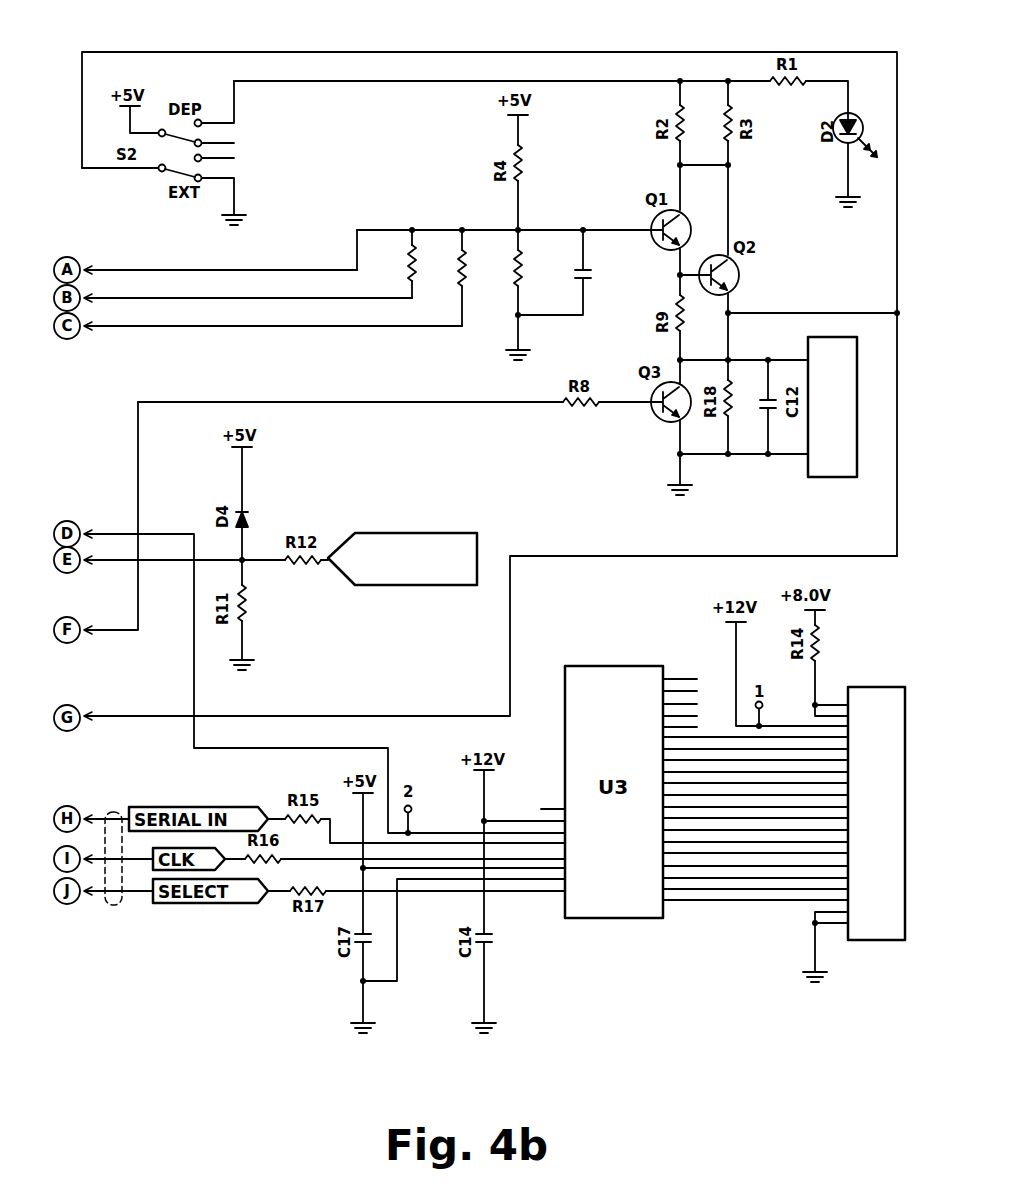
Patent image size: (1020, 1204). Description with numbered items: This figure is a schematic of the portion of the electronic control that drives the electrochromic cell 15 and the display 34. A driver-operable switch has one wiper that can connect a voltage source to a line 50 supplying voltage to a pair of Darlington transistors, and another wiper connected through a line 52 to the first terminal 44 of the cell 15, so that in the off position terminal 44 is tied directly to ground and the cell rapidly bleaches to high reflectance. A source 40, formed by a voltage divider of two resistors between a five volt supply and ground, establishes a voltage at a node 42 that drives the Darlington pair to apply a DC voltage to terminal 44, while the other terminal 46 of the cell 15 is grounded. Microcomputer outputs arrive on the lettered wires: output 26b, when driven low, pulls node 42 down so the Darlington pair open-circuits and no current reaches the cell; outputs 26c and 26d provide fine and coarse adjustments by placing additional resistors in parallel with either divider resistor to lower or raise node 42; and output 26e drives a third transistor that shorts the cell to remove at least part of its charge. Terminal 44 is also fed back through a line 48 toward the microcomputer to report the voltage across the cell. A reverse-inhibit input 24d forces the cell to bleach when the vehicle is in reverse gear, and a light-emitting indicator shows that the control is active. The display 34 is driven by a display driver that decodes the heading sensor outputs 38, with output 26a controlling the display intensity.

The line 52 is at (430, 52).
The line 50 is at (320, 82).
The source 40 is at (483, 210).
The node 42 is at (518, 230).
The output 26b is at (130, 269).
The output 26c is at (158, 299).
The output 26d is at (233, 327).
The output 26e is at (138, 513).
The output 26a is at (194, 641).
The reverse-inhibit input 24d is at (331, 555).
The first terminal 44 is at (745, 360).
The terminal 46 is at (745, 455).
The electrochromic cell 15 is at (820, 478).
The line 48 is at (548, 556).
The outputs 38 is at (120, 905).
The display 34 is at (878, 940).